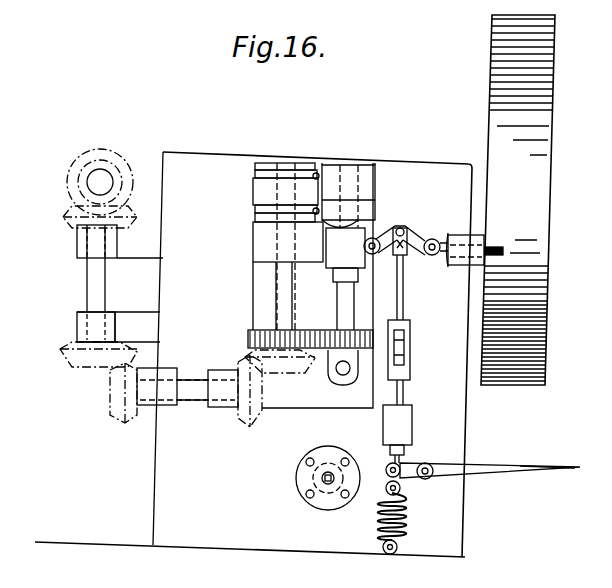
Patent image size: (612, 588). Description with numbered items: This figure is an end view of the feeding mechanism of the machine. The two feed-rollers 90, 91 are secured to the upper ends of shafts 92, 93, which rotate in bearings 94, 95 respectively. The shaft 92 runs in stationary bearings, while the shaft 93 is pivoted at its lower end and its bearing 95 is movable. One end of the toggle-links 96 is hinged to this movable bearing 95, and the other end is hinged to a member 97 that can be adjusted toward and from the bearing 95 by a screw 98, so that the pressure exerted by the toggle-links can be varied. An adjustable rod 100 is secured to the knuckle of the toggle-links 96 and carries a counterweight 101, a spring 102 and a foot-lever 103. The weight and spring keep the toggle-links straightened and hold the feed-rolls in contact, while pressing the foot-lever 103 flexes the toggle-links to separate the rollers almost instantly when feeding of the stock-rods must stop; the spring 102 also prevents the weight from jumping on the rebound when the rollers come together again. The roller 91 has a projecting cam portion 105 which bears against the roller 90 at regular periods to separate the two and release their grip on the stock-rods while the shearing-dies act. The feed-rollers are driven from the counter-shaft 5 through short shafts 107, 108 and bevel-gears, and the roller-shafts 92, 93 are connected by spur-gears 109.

The counter-shaft 5 is at (97, 181).
The feed-roller 90 is at (286, 246).
The feed-roller 91 is at (348, 196).
The shaft 92 is at (283, 288).
The shaft 93 is at (344, 300).
The bearing 94 is at (262, 236).
The movable bearing 95 is at (353, 255).
The toggle-links 96 is at (388, 229).
The member 97 is at (448, 236).
The screw 98 is at (489, 249).
The adjustable rod 100 is at (404, 297).
The counterweight 101 is at (405, 425).
The spring 102 is at (406, 512).
The foot-lever 103 is at (513, 469).
The cam portion 105 is at (360, 196).
The short shaft 107 is at (90, 284).
The short shaft 108 is at (197, 388).
The spur-gears 109 is at (325, 352).